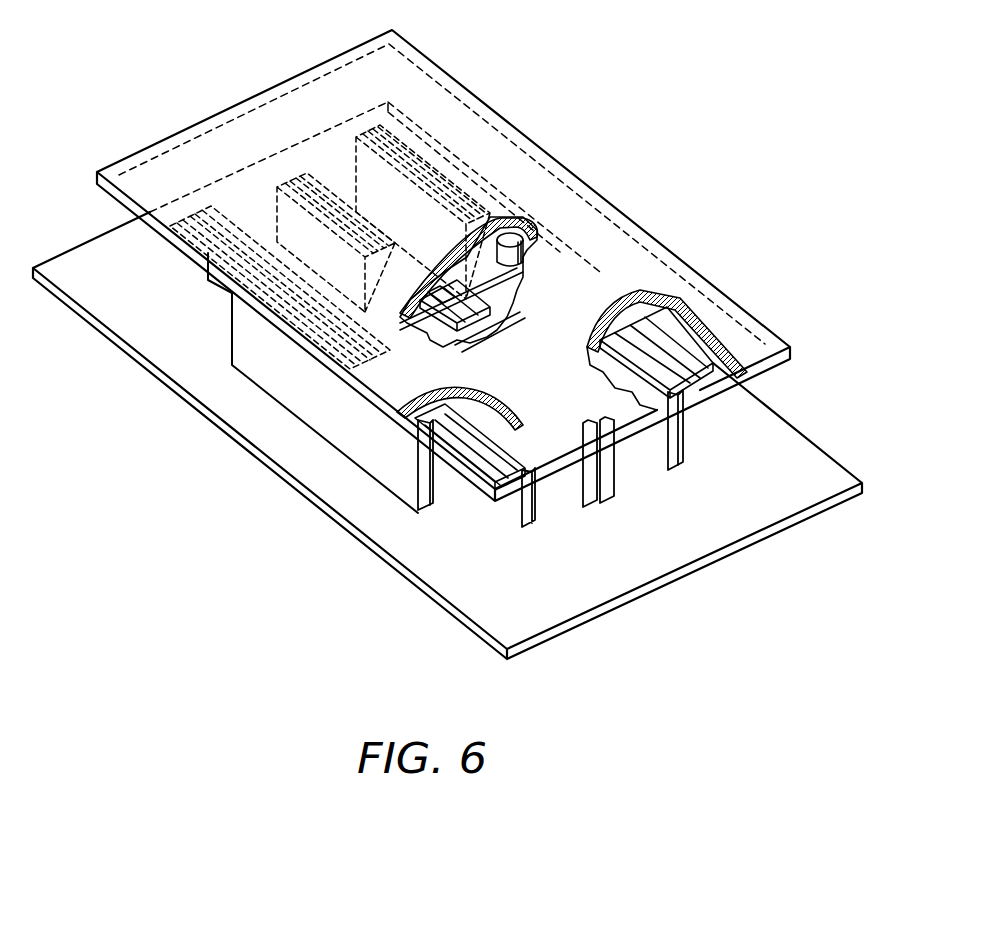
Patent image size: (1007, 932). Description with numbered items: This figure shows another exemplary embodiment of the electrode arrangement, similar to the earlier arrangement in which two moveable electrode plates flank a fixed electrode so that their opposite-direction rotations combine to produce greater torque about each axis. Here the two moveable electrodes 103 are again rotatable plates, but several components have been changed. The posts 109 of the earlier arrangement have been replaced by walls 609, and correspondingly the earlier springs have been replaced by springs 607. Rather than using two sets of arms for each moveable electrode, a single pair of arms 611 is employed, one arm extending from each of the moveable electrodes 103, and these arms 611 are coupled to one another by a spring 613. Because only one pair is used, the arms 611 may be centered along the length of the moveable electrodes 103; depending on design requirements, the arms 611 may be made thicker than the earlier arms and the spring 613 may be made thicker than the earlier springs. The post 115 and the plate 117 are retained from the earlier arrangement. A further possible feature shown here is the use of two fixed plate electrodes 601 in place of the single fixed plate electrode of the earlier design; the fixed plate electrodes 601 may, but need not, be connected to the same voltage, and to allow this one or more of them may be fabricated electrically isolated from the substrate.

The moveable electrodes 103 is at (677, 452).
The posts 109 is at (780, 443).
The post 115 is at (537, 225).
The plate 117 is at (765, 343).
The fixed plate electrodes 601 is at (607, 493).
The springs 607 is at (453, 440).
The walls 609 is at (427, 500).
The arms 611 is at (481, 262).
The spring 613 is at (447, 272).